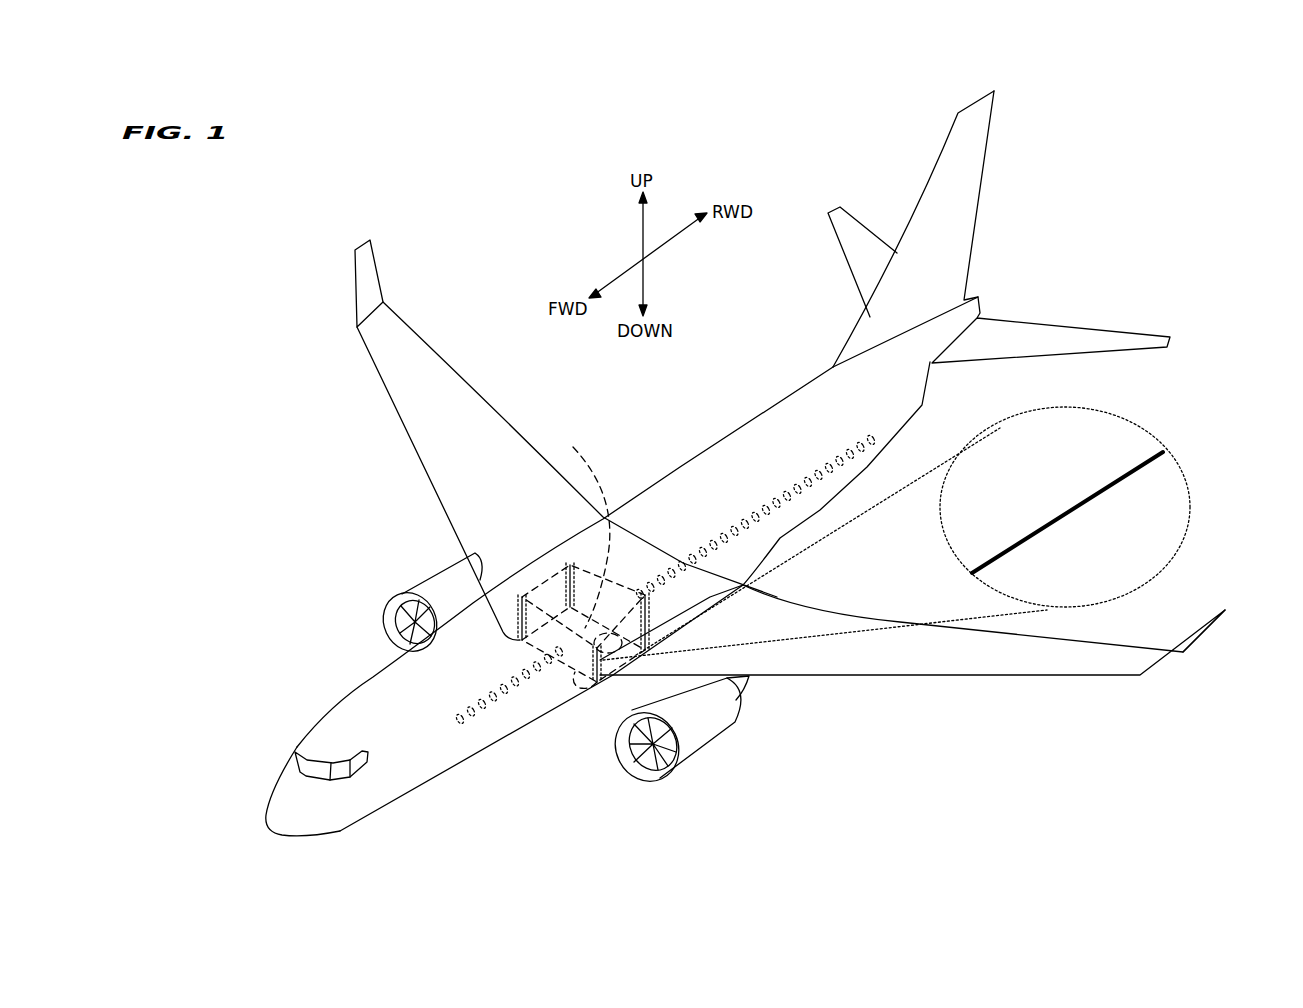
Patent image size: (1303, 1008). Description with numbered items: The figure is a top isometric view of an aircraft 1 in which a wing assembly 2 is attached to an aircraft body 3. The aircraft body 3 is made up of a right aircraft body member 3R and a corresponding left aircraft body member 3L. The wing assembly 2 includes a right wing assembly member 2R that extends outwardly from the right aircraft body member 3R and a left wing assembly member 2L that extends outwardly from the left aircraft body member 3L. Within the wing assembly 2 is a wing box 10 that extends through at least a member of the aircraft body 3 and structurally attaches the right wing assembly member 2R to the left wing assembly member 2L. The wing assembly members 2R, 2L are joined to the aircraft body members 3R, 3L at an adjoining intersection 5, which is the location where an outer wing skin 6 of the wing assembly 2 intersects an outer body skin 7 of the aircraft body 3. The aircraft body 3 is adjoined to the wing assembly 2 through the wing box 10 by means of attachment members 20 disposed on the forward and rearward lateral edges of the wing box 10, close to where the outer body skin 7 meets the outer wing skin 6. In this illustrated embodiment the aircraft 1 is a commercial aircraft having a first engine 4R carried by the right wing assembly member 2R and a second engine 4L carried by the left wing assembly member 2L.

The aircraft 1 is at (322, 230).
The wing assembly 2 is at (955, 655).
The left wing assembly member 2L is at (1133, 665).
The right wing assembly member 2R is at (396, 378).
The aircraft body 3 is at (285, 812).
The left aircraft body member 3L is at (420, 773).
The right aircraft body member 3R is at (357, 682).
The second engine 4L is at (712, 721).
The first engine 4R is at (420, 605).
The adjoining intersection 5 is at (1137, 458).
The outer wing skin 6 is at (1172, 500).
The outer body skin 7 is at (1110, 445).
The wing box 10 is at (583, 531).
The attachment members 20 is at (640, 610).